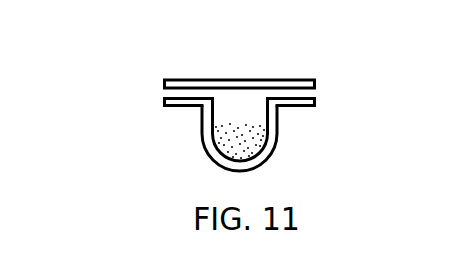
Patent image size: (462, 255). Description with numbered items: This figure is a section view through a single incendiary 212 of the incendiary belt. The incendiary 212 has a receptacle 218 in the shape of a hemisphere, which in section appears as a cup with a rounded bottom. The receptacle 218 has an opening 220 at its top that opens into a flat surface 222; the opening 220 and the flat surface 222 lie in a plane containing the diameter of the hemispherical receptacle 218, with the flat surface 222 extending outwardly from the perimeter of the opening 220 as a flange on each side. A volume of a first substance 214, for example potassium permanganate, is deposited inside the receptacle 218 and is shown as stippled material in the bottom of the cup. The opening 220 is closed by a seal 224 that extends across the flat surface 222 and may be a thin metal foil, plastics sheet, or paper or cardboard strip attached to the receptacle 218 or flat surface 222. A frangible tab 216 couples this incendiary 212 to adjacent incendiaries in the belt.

The incendiary 212 is at (350, 70).
The first substance 214 is at (215, 143).
The tab 216 is at (442, 245).
The receptacle 218 is at (209, 126).
The opening 220 is at (247, 103).
The flat surface 222 is at (168, 109).
The seal 224 is at (202, 78).